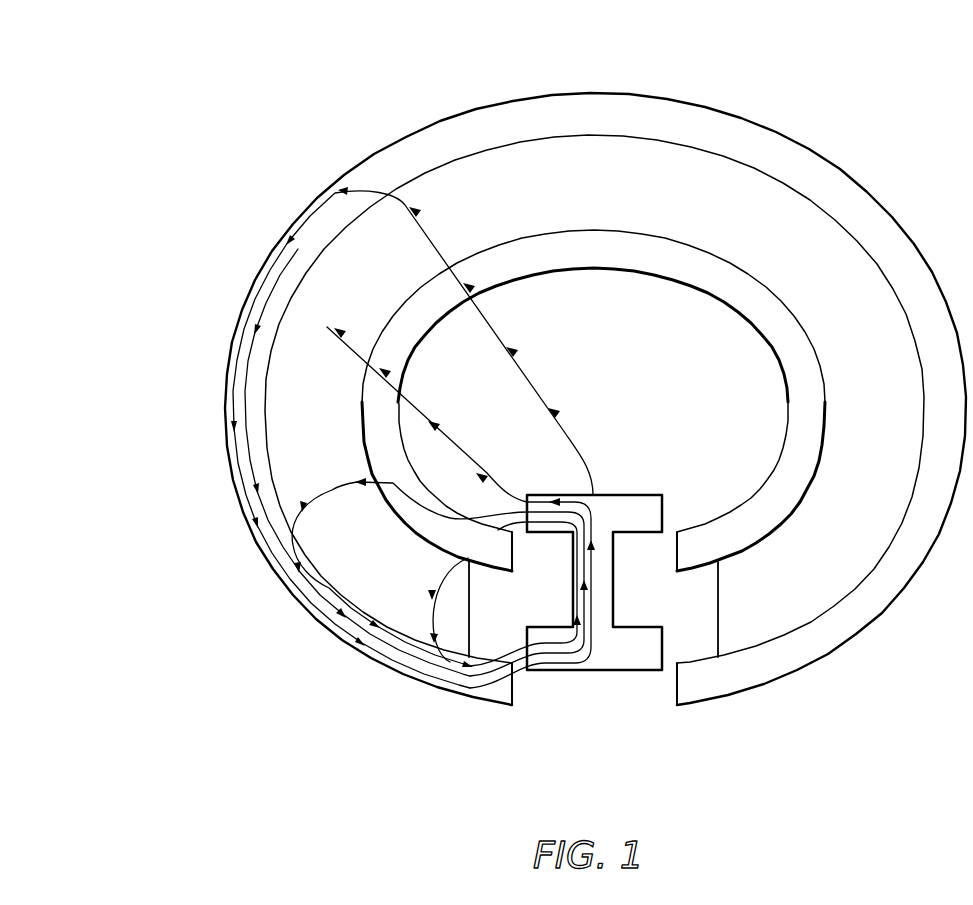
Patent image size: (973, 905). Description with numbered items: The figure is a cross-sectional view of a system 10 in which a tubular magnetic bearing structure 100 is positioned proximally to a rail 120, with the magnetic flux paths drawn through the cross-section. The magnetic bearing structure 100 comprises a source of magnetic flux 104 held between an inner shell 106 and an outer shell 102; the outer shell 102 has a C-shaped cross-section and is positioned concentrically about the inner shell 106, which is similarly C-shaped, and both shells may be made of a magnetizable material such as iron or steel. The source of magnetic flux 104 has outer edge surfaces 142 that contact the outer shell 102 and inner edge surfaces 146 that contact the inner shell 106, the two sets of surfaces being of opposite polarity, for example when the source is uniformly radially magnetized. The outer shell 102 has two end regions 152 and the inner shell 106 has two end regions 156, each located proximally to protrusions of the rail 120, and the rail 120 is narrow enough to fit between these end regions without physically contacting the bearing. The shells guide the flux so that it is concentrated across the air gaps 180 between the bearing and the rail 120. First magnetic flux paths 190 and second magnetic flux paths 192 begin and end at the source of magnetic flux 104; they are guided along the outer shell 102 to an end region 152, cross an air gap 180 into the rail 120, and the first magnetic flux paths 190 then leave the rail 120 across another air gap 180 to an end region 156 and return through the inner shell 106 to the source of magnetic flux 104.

The system 10 is at (557, 406).
The tubular magnetic bearing structure 100 is at (288, 158).
The outer shell 102 is at (600, 107).
The source of magnetic flux 104 is at (528, 162).
The inner shell 106 is at (603, 262).
The rail 120 is at (550, 495).
The outer edge surfaces 142 is at (743, 160).
The inner edge surfaces 146 is at (705, 258).
The end regions of the outer shell 152 is at (512, 707).
The end regions of the inner shell 156 is at (512, 571).
The air gaps 180 is at (516, 506).
The first magnetic flux paths 190 is at (395, 483).
The second magnetic flux paths 192 is at (417, 410).